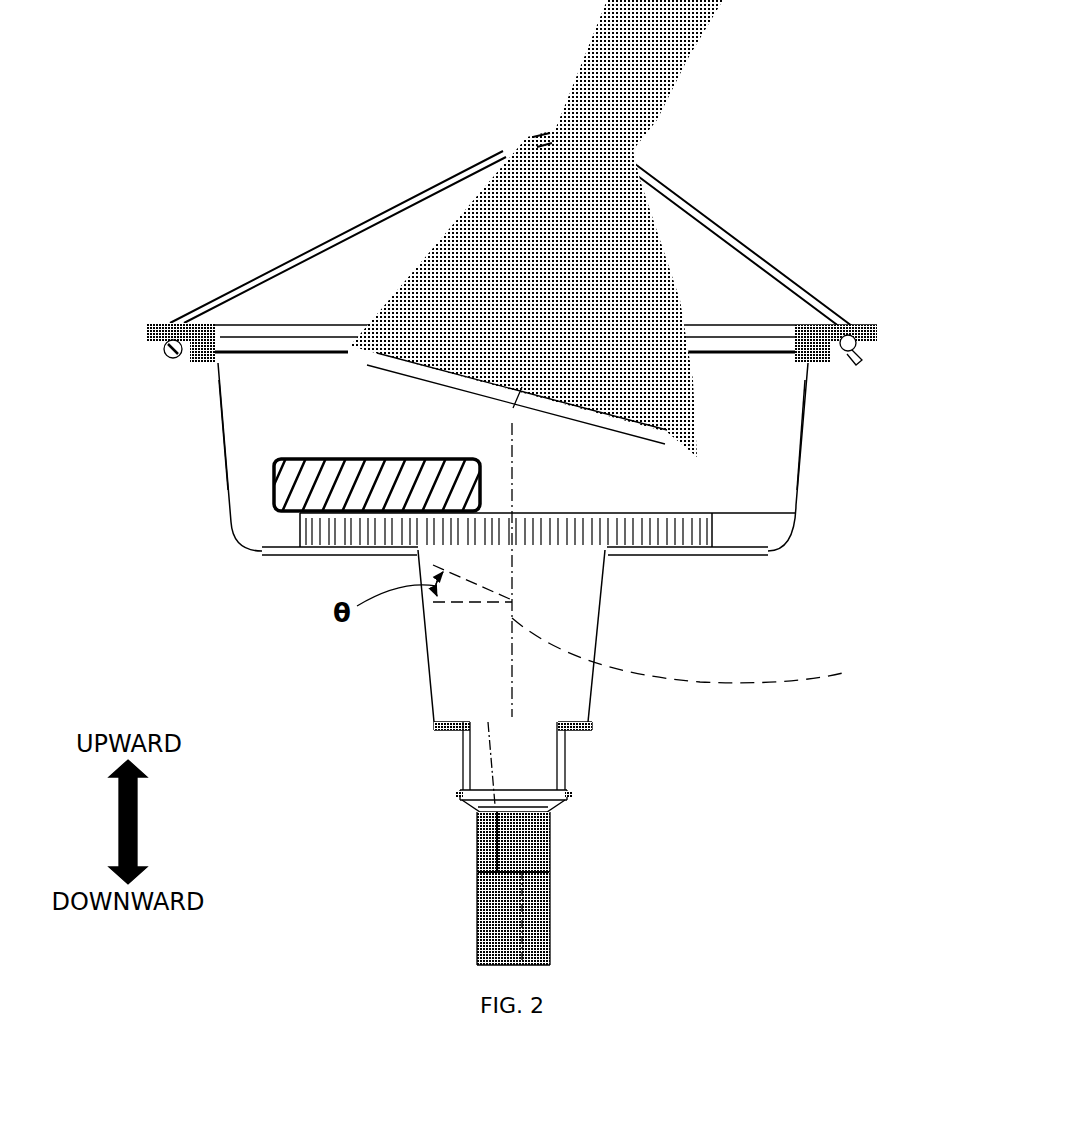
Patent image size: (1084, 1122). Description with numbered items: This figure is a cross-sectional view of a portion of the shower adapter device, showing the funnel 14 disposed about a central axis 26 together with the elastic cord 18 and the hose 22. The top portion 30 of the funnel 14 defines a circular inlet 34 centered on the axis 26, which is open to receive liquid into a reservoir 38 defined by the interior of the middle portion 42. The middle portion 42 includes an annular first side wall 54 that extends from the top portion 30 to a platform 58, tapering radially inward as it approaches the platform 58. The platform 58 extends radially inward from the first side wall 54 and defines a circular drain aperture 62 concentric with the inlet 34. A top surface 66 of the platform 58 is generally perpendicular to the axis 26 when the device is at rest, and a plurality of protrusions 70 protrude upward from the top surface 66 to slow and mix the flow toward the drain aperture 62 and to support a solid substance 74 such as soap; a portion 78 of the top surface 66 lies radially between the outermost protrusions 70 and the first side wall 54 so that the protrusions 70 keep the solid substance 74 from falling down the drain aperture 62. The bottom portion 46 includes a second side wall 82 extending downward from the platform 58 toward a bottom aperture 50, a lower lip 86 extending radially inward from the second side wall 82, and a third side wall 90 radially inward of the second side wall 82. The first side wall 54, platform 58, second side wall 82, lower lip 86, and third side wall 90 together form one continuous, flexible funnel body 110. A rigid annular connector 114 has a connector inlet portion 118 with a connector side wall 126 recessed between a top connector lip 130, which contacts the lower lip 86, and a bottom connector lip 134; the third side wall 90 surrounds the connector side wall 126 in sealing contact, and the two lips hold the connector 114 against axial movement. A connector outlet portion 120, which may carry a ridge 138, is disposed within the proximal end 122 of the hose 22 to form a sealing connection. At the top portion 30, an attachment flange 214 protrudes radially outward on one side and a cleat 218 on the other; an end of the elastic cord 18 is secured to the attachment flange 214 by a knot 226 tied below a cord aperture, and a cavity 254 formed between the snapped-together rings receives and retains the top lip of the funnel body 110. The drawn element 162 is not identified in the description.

The funnel 14 is at (112, 292).
The elastic cord 18 is at (360, 222).
The hose 22 is at (550, 943).
The central axis 26 is at (699, 651).
The top portion 30 is at (744, 322).
The inlet 34 is at (267, 334).
The reservoir 38 is at (752, 415).
The middle portion 42 is at (182, 433).
The bottom portion 46 is at (615, 705).
The bottom aperture 50 is at (462, 780).
The first side wall 54 is at (222, 440).
The platform 58 is at (332, 553).
The drain aperture 62 is at (542, 553).
The top surface 66 is at (290, 547).
The protrusions 70 is at (713, 517).
The solid substance 74 is at (274, 478).
The portion 78 is at (738, 544).
The second side wall 82 is at (423, 633).
The lower lip 86 is at (580, 730).
The third side wall 90 is at (560, 770).
The funnel body 110 is at (802, 499).
The connector 114 is at (562, 803).
The connector inlet portion 118 is at (548, 757).
The connector outlet portion 120 is at (533, 854).
The proximal end 122 is at (477, 818).
The connector side wall 126 is at (463, 761).
The top connector lip 130 is at (455, 722).
The bottom connector lip 134 is at (460, 798).
The ridge 138 is at (477, 855).
The roof apex 162 is at (510, 128).
The attachment flange 214 is at (878, 331).
The cleat 218 is at (148, 332).
The knot 226 is at (856, 350).
The cavity 254 is at (196, 349).